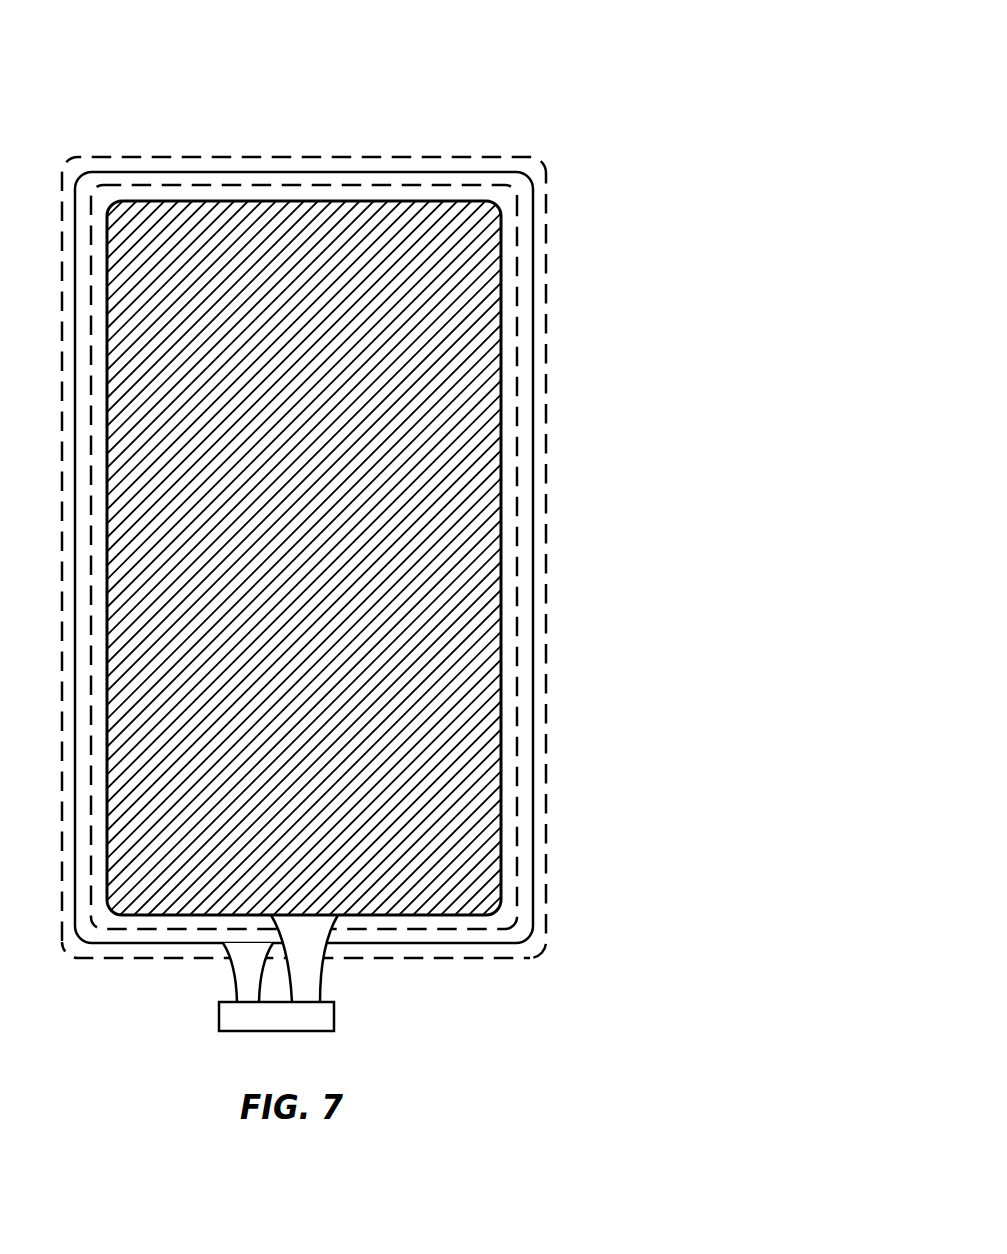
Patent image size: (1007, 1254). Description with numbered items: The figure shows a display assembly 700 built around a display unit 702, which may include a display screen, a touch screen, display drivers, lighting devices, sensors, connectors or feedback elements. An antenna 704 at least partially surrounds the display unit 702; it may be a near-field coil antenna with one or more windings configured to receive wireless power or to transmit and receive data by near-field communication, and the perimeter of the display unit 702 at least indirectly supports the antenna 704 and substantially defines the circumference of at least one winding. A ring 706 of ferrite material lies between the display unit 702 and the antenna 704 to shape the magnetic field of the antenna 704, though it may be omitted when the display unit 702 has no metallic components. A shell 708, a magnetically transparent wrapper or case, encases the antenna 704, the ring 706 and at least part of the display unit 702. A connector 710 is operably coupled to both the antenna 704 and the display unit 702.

The display assembly 700 is at (598, 74).
The display unit 702 is at (460, 413).
The antenna 704 is at (532, 673).
The ring 706 is at (516, 568).
The shell 708 is at (545, 773).
The connector 710 is at (292, 1031).